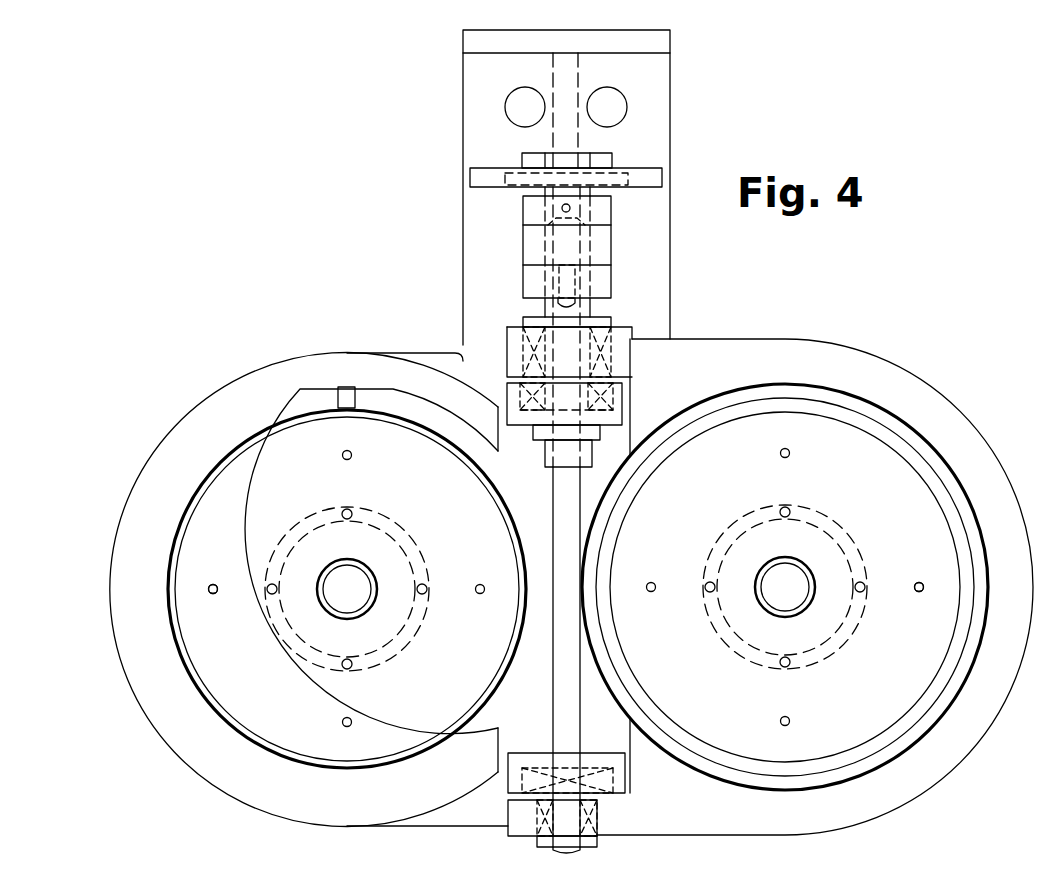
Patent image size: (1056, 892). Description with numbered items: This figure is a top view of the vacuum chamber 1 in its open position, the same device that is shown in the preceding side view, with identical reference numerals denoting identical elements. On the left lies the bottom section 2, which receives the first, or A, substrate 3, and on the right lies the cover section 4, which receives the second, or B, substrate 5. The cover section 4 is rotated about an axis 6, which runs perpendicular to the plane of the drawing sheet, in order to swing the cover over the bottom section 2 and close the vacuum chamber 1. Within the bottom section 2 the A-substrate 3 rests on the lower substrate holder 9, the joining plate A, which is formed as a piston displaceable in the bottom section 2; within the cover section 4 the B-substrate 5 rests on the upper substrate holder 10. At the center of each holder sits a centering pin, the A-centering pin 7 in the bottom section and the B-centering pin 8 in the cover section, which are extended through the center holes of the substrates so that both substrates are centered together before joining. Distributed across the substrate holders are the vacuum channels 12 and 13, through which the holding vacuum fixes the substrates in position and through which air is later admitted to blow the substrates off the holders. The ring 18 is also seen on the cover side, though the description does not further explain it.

The vacuum chamber 1 is at (383, 220).
The bottom section 2 is at (213, 412).
The first (A) substrate 3 is at (456, 509).
The cover section 4 is at (940, 412).
The second (B) substrate 5 is at (900, 509).
The axis 6 is at (548, 848).
The A-centering pin 7 is at (352, 598).
The B-centering pin 8 is at (782, 594).
The lower substrate holder 9 is at (458, 568).
The upper substrate holder 10 is at (912, 568).
The vacuum channel 12 is at (270, 550).
The vacuum channel 13 is at (213, 594).
The ring of right housing 18 is at (955, 480).